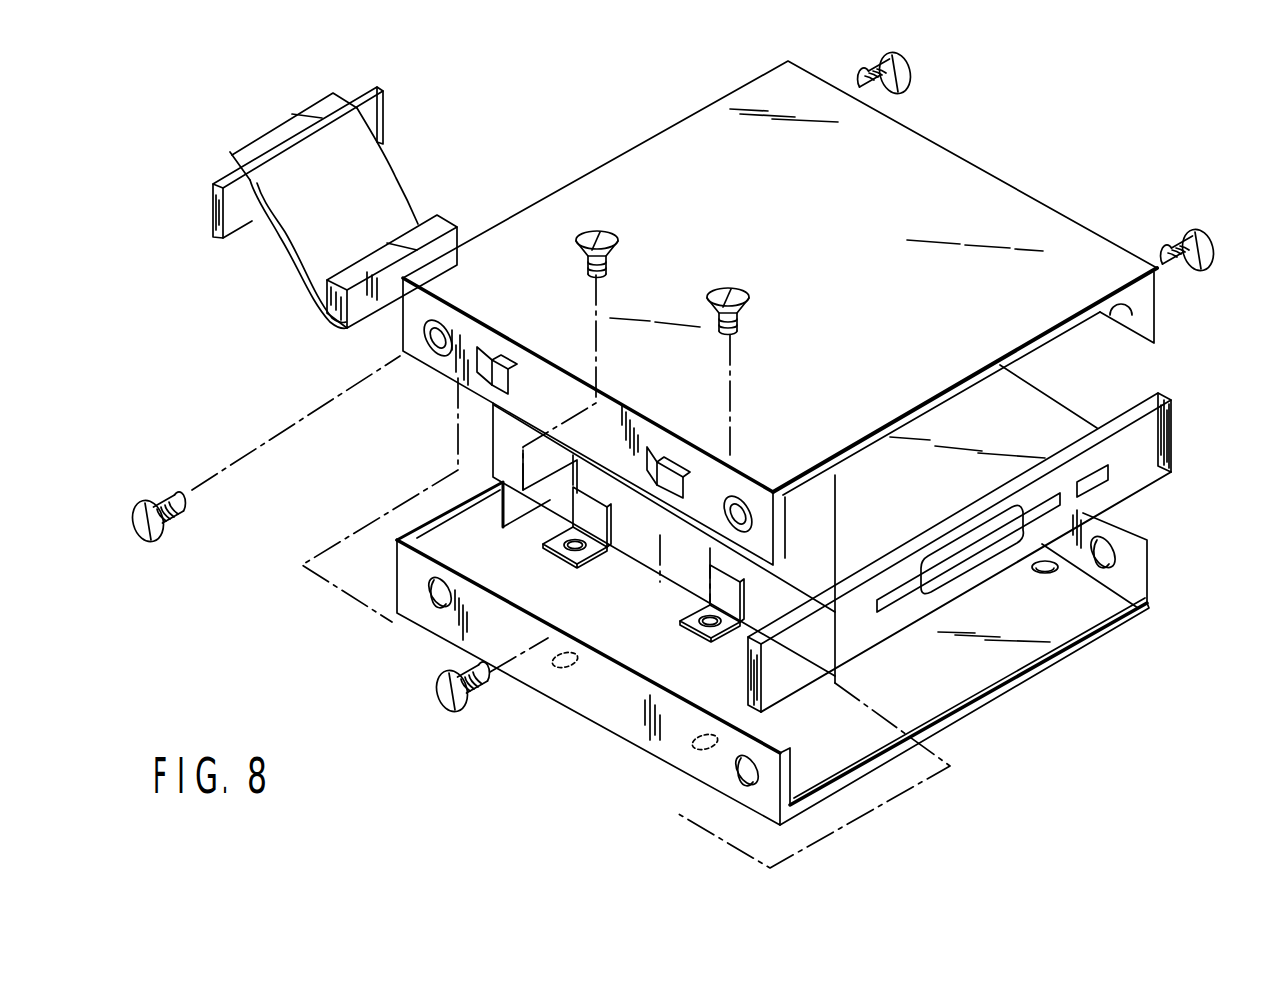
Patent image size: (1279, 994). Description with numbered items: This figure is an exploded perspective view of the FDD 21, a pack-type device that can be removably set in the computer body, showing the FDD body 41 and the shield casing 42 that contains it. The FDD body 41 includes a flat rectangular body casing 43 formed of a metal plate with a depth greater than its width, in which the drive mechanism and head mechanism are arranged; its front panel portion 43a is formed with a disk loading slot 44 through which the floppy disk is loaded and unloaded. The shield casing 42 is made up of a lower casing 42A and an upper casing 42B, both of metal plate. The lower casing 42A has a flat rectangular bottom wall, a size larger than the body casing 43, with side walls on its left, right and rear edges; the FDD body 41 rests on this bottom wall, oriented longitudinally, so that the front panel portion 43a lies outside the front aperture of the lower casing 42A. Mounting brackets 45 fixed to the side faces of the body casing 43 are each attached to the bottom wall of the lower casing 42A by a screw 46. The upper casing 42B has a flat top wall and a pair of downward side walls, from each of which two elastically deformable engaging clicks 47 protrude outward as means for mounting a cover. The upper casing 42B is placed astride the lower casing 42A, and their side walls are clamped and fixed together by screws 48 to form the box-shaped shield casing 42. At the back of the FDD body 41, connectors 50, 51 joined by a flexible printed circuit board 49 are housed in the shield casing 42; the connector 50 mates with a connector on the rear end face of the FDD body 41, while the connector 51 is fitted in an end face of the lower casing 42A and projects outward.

The FDD 21 is at (1010, 163).
The FDD body 41 is at (1040, 402).
The shield casing 42 is at (1052, 713).
The lower casing 42A is at (897, 752).
The upper casing 42B is at (840, 437).
The body casing 43 is at (950, 425).
The front panel portion 43a is at (1163, 473).
The disk loading slot 44 is at (973, 547).
The mounting bracket 45 is at (563, 555).
The screw 46 is at (611, 238).
The engaging click 47 is at (495, 358).
The screw 48 is at (910, 60).
The flexible printed circuit board 49 is at (378, 187).
The connector 50 is at (317, 308).
The connector 51 is at (288, 113).